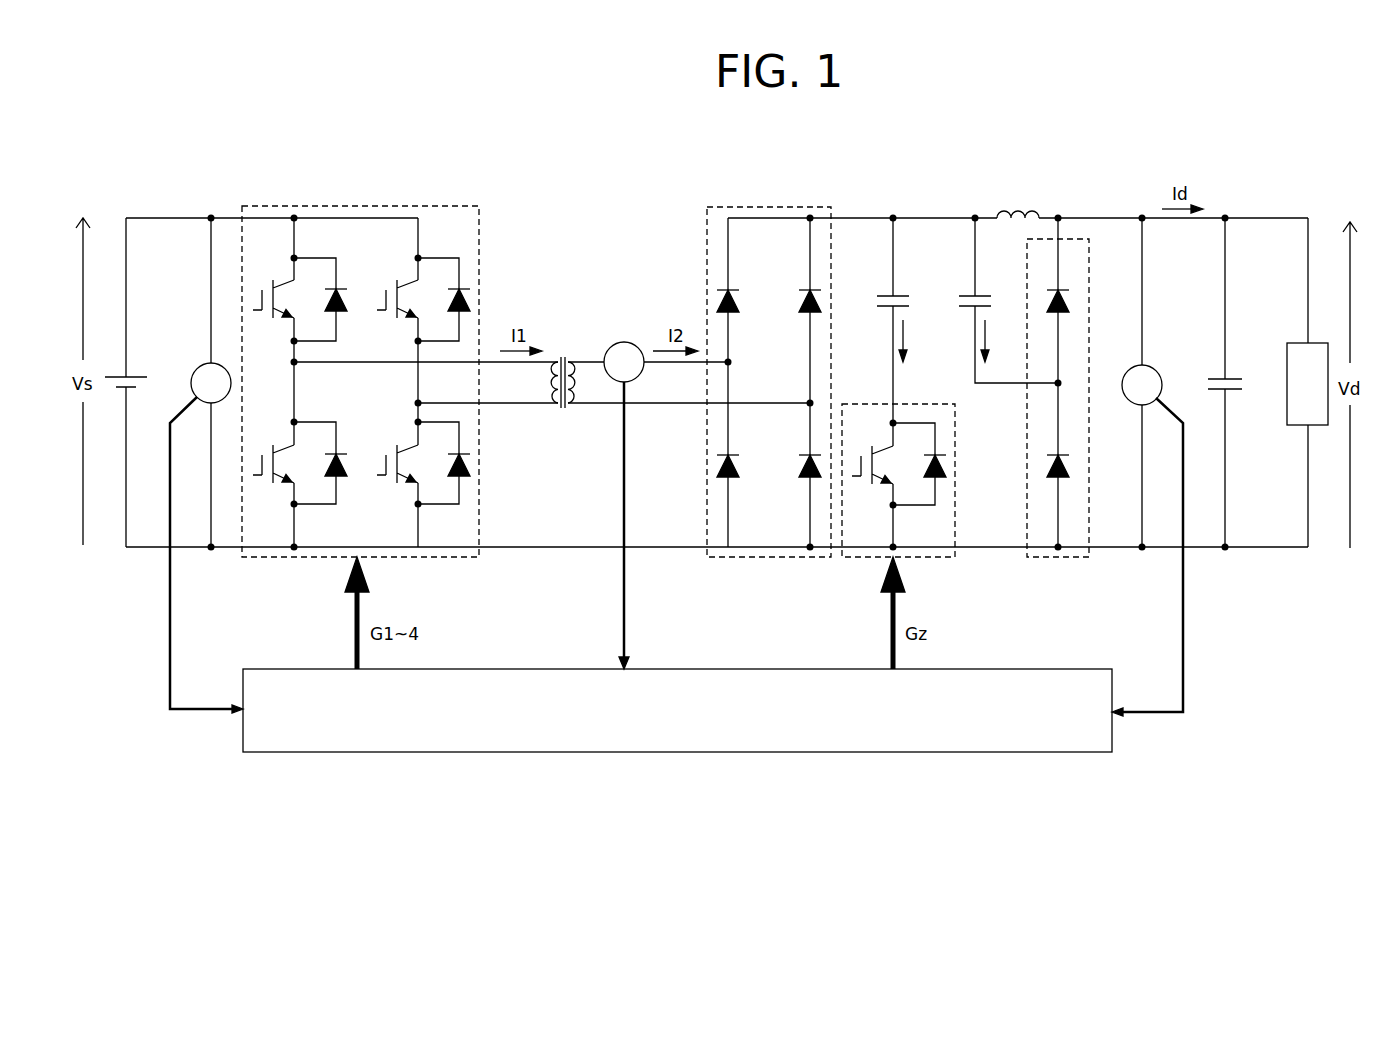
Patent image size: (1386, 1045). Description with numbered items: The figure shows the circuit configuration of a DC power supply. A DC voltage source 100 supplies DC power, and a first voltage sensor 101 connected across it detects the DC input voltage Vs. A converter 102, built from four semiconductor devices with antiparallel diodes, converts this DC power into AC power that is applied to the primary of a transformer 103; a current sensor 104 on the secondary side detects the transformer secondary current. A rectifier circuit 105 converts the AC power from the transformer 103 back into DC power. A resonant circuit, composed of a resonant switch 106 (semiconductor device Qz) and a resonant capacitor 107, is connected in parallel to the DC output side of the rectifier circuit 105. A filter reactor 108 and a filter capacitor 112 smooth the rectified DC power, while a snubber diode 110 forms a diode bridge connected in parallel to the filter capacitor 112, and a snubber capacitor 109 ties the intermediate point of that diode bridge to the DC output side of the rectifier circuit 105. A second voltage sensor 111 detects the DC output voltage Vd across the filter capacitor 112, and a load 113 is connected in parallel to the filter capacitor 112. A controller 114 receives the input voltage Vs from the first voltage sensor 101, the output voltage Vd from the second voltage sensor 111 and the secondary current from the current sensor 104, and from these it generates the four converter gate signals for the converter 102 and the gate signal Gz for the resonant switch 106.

The DC voltage source 100 is at (106, 372).
The first voltage sensor 101 is at (199, 366).
The converter 102 is at (263, 560).
The transformer 103 is at (566, 360).
The current sensor 104 is at (627, 342).
The rectifier circuit 105 is at (767, 560).
The resonant switch 106 is at (870, 560).
The resonant capacitor 107 is at (902, 290).
The filter reactor 108 is at (1016, 207).
The snubber capacitor 109 is at (986, 290).
The snubber diode 110 is at (1057, 560).
The second voltage sensor 111 is at (1152, 370).
The filter capacitor 112 is at (1235, 372).
The load 113 is at (1318, 352).
The controller 114 is at (665, 752).